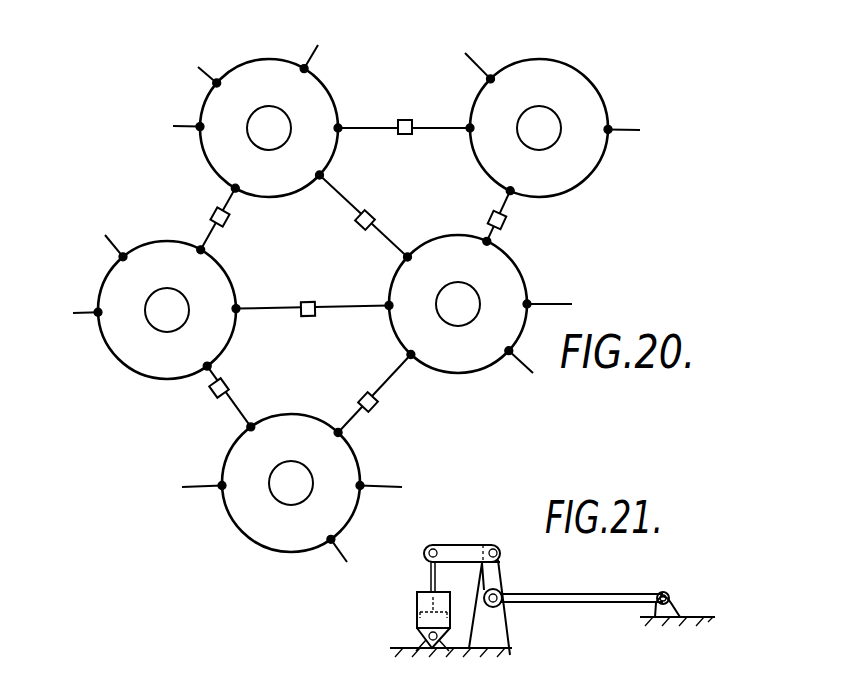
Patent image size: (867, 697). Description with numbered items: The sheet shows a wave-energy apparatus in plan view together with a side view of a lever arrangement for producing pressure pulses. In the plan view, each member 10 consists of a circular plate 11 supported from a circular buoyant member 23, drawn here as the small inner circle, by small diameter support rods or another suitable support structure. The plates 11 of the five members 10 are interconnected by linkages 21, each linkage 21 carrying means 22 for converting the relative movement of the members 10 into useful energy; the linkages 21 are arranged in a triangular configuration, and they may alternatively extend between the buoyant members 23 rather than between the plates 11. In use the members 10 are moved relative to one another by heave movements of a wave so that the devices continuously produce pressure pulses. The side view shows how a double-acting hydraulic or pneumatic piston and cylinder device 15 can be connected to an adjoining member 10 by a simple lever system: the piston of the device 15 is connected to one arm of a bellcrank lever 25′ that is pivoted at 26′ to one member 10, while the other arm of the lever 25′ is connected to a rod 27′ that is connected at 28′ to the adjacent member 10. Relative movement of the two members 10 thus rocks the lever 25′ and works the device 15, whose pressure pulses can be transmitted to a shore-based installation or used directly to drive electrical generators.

In FIG. 20, the circular plate 11 is at (262, 59).
In FIG. 20, the linkage 21 is at (233, 408).
In FIG. 20, the means 22 is at (203, 405).
In FIG. 20, the circular buoyant member 23 is at (253, 124).
In FIG. 21, the bellcrank lever 25′ is at (462, 552).
In FIG. 21, the pivot 26′ is at (500, 553).
In FIG. 21, the rod 27′ is at (583, 596).
In FIG. 21, the connection 28′ is at (683, 580).
In FIG. 21, the piston and cylinder device 15 is at (418, 603).
In FIG. 21, the member 10 is at (405, 658).